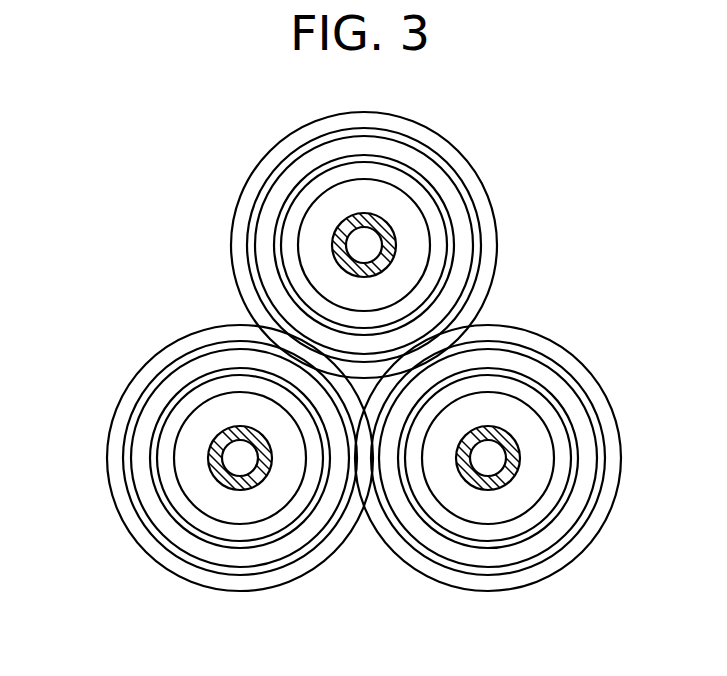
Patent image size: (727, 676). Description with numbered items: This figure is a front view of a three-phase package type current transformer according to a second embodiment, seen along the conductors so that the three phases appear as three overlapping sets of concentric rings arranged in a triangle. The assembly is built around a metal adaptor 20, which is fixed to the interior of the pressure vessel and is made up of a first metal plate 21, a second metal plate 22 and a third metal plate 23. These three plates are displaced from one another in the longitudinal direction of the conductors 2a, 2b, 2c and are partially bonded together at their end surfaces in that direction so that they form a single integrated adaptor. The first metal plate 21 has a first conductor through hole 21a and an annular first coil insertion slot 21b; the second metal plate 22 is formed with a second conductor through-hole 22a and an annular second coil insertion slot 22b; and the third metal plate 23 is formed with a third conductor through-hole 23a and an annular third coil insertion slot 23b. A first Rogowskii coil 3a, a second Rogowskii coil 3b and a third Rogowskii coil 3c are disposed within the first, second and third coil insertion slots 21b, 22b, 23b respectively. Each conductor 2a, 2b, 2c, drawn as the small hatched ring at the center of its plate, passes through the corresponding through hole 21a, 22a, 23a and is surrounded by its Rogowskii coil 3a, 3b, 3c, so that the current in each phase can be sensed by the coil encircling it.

The metal adaptor 20 is at (225, 200).
The first metal plate 21 is at (490, 203).
The first conductor through hole 21a is at (393, 183).
The first coil insertion slot 21b is at (478, 247).
The conductor 2a is at (388, 229).
The first Rogowskii coil 3a is at (253, 232).
The second metal plate 22 is at (612, 510).
The second conductor through-hole 22a is at (540, 402).
The second coil insertion slot 22b is at (575, 538).
The conductor 2b is at (520, 458).
The second Rogowskii coil 3b is at (595, 427).
The third metal plate 23 is at (130, 532).
The third conductor through-hole 23a is at (237, 525).
The third coil insertion slot 23b is at (175, 557).
The conductor 2c is at (209, 461).
The third Rogowskii coil 3c is at (130, 445).